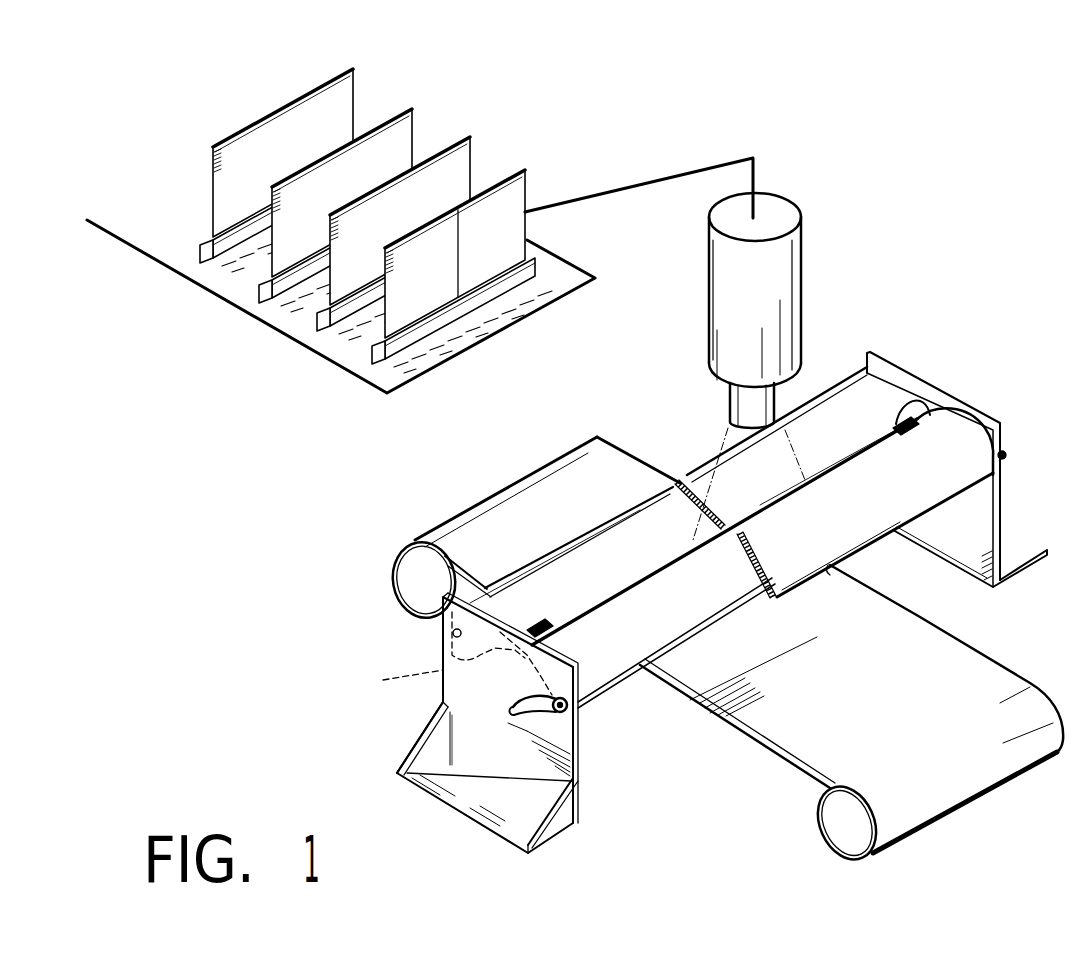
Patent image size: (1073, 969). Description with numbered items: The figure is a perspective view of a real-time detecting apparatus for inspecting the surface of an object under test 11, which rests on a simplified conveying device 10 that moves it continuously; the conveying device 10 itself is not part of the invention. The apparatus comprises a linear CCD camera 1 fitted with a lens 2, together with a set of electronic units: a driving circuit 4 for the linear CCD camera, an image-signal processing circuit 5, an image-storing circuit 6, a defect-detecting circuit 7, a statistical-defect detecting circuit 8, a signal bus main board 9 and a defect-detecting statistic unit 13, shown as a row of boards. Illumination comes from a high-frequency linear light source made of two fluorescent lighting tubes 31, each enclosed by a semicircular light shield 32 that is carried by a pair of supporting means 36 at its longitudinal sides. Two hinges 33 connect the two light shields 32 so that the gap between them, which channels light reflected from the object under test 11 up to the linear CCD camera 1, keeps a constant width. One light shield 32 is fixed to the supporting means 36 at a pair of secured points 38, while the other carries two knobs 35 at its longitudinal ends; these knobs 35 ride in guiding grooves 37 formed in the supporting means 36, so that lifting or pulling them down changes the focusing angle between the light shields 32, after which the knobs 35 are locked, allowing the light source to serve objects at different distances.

The linear CCD camera 1 is at (800, 243).
The lens 2 is at (730, 403).
The driving circuit 4 is at (520, 193).
The image-signal processing circuit 5 is at (393, 317).
The image-storing circuit 6 is at (457, 143).
The defect-detecting circuit 7 is at (338, 283).
The statistical-defect detecting circuit 8 is at (400, 110).
The signal bus main board 9 is at (425, 367).
The conveying device 10 is at (843, 820).
The object under test 11 is at (1037, 703).
The defect-detecting statistic unit 13 is at (317, 100).
The fluorescent lighting tube 31 is at (676, 551).
The light shield 32 is at (603, 670).
The hinge 33 is at (900, 420).
The knob 35 is at (1004, 453).
The supporting means 36 is at (1002, 510).
The guiding groove 37 is at (527, 720).
The secured point 38 is at (450, 634).